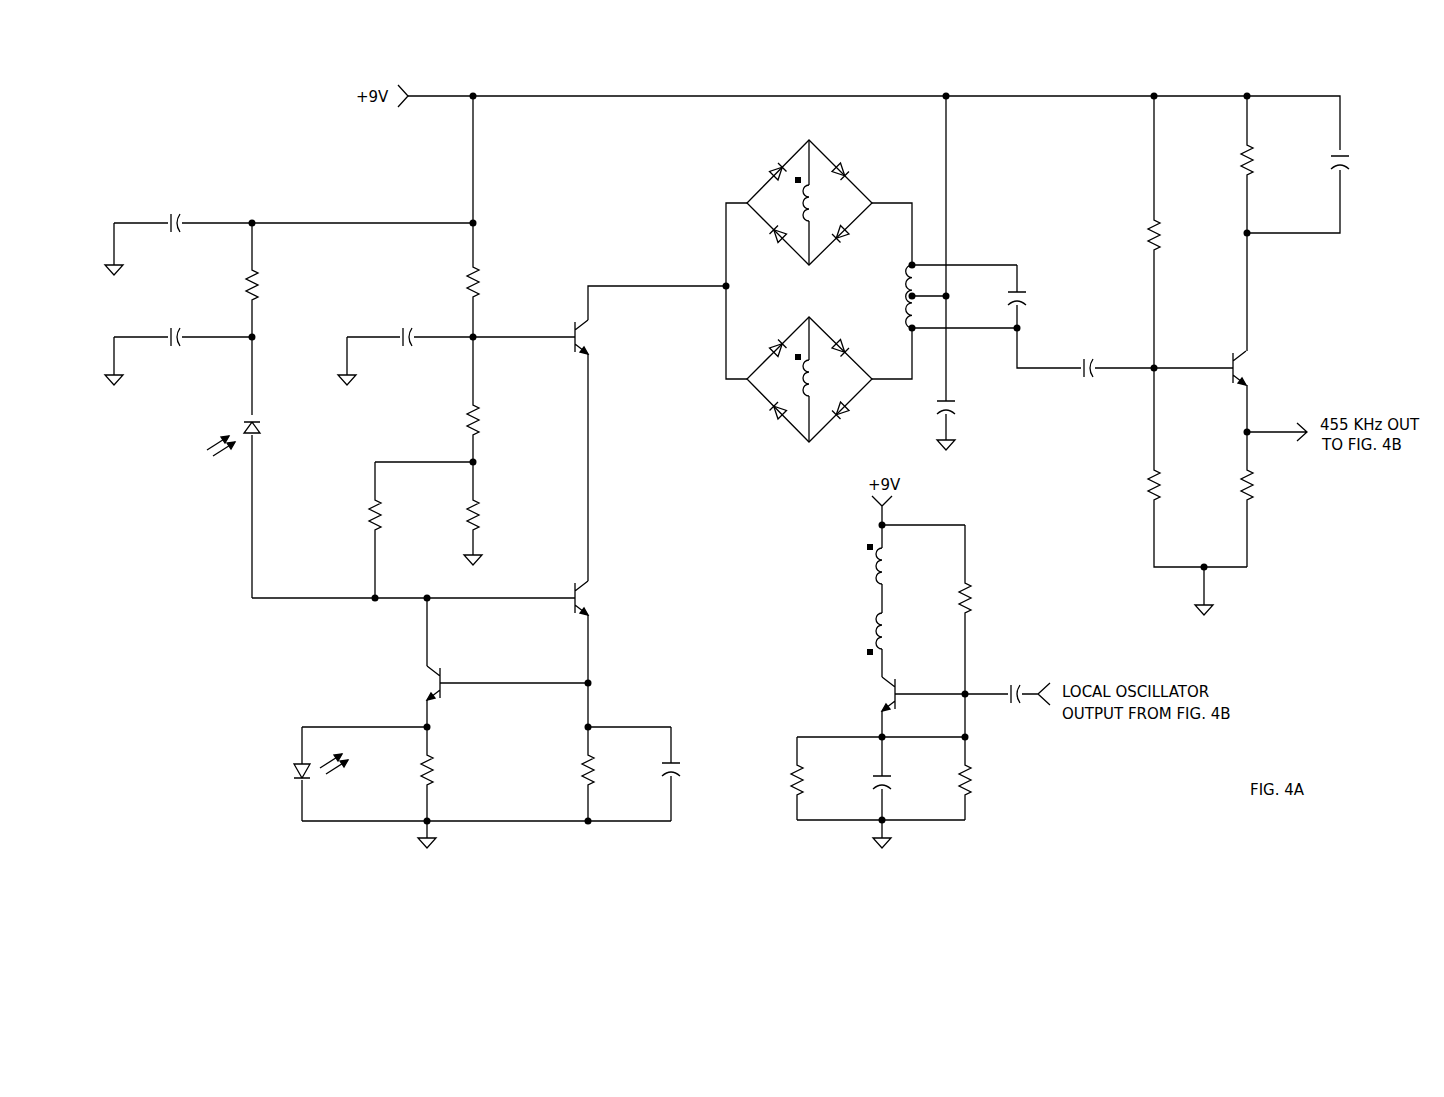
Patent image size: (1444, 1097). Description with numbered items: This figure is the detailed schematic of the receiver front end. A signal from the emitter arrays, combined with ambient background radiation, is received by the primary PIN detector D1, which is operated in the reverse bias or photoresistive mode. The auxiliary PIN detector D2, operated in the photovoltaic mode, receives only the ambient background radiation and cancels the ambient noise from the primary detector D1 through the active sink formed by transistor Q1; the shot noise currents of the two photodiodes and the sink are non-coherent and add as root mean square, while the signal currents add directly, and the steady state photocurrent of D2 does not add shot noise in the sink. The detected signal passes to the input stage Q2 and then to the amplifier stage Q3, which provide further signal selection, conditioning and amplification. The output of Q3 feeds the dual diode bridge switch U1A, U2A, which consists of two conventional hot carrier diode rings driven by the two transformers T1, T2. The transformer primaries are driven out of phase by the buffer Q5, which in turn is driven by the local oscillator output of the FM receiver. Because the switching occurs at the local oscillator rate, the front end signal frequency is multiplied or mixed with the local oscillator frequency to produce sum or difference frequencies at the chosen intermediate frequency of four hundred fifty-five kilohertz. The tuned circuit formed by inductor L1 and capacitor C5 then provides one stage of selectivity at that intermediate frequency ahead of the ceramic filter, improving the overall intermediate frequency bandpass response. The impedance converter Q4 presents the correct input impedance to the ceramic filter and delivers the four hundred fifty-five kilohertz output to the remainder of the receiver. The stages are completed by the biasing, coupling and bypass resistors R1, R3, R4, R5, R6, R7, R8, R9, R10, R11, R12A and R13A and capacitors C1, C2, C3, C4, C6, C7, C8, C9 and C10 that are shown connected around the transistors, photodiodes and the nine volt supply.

The capacitor 1uF/16V C1 is at (703, 763).
The capacitor 10uF/10V C2 is at (172, 339).
The capacitor 1uF/16V C3 is at (403, 339).
The capacitor 10uF/10V C4 is at (172, 225).
The tuned circuit capacitor C5 is at (1030, 296).
The capacitor C6 is at (959, 404).
The capacitor 0.01 C7 is at (1088, 367).
The capacitor 0.01 C8 is at (1360, 156).
The capacitor 0.01 C9 is at (899, 780).
The capacitor 0.001 C10 is at (1010, 692).
The resistor R1 is at (529, 770).
The resistor 10M R3 is at (398, 515).
The resistor 5.1K R4 is at (496, 515).
The resistor 10K R5 is at (495, 420).
The resistor 10K R6 is at (495, 279).
The resistor 1K R7 is at (269, 287).
The resistor 120K R8 is at (1180, 484).
The resistor 27K R9 is at (1175, 235).
The resistor 5.1K R10 is at (1271, 160).
The resistor 4.7K R11 is at (1270, 484).
The resistor 68K R12A is at (988, 688).
The resistor 2.7K R13A is at (820, 779).
The active sink Q1 is at (393, 679).
The input stage Q2 is at (617, 600).
The tuned cascode amplifier Q3 is at (618, 339).
The impedance converter Q4 is at (1272, 366).
The buffer Q5 is at (851, 696).
The primary PIN detector D1 is at (265, 435).
The auxiliary PIN detector D2 is at (287, 765).
The diode bridge switch U1A is at (809, 189).
The diode bridge switch U2A is at (809, 366).
The transformer winding T1 is at (850, 362).
The transformer winding T2 is at (850, 486).
The tuned circuit inductor L1 is at (894, 296).